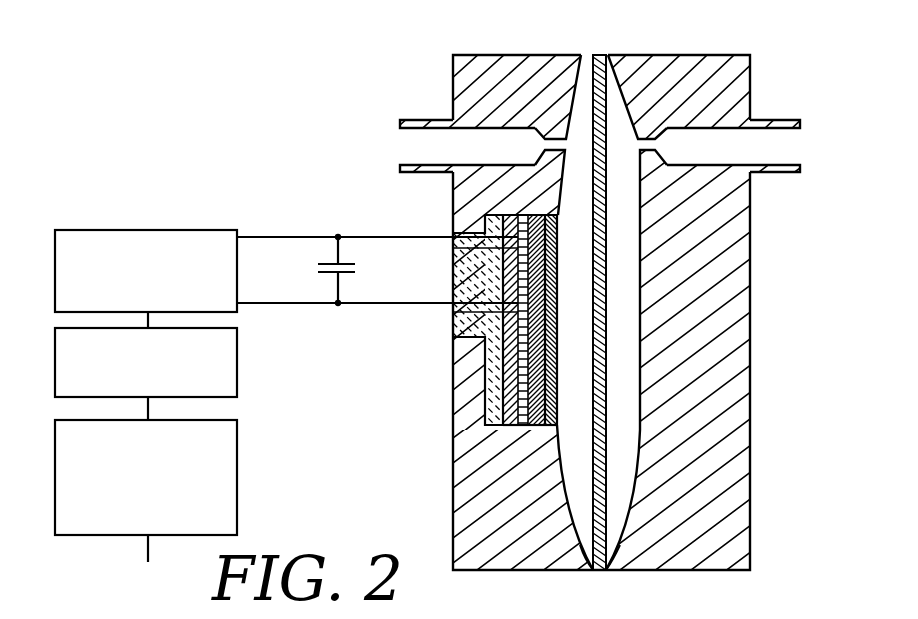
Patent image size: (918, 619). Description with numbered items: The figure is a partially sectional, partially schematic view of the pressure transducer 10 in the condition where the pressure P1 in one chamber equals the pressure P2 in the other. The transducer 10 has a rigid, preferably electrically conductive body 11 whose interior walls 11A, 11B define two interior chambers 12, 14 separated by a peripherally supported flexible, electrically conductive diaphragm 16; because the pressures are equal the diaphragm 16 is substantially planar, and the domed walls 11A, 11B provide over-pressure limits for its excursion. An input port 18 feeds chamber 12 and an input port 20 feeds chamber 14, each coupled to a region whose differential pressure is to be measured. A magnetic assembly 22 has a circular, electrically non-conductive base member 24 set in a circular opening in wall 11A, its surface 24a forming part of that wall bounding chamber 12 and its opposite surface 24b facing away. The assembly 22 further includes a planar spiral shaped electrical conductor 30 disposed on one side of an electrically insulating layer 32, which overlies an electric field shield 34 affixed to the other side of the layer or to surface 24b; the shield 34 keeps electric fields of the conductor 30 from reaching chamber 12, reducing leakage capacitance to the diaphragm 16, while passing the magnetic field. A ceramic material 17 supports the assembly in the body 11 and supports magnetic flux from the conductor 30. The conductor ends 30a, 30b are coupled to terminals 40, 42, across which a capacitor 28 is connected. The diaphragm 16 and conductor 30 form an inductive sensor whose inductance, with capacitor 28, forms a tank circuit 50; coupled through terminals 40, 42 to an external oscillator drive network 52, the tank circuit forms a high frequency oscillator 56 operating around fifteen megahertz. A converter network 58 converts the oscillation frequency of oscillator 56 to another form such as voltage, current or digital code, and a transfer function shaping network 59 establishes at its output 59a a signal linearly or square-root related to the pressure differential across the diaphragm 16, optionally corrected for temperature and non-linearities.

The pressure transducer 10 is at (738, 28).
The body 11 is at (718, 263).
The interior wall 11A is at (584, 527).
The interior wall 11B is at (616, 527).
The interior chamber 12 is at (586, 93).
The interior chamber 14 is at (611, 100).
The diaphragm 16 is at (628, 118).
The ceramic material 17 is at (490, 345).
The input port 18 is at (406, 148).
The input port 20 is at (784, 140).
The magnetic assembly 22 is at (525, 427).
The base member 24 is at (557, 355).
The surface 24a is at (552, 415).
The surface 24b is at (552, 328).
The capacitor 28 is at (313, 268).
The spiral shaped electrical conductor 30 is at (485, 266).
The end of conductor 30a is at (505, 303).
The end of conductor 30b is at (518, 235).
The electrically insulating layer 32 is at (535, 427).
The electric field shield 34 is at (545, 427).
The terminal 40 is at (338, 232).
The terminal 42 is at (338, 308).
The tank circuit 50 is at (300, 119).
The oscillator drive network 52 is at (112, 228).
The oscillator 56 is at (53, 166).
The converter network 58 is at (55, 350).
The transfer function shaping network 59 is at (55, 462).
The output 59a is at (260, 559).
The pressure in chamber 12 P1 is at (586, 193).
The pressure in chamber 14 P2 is at (632, 193).